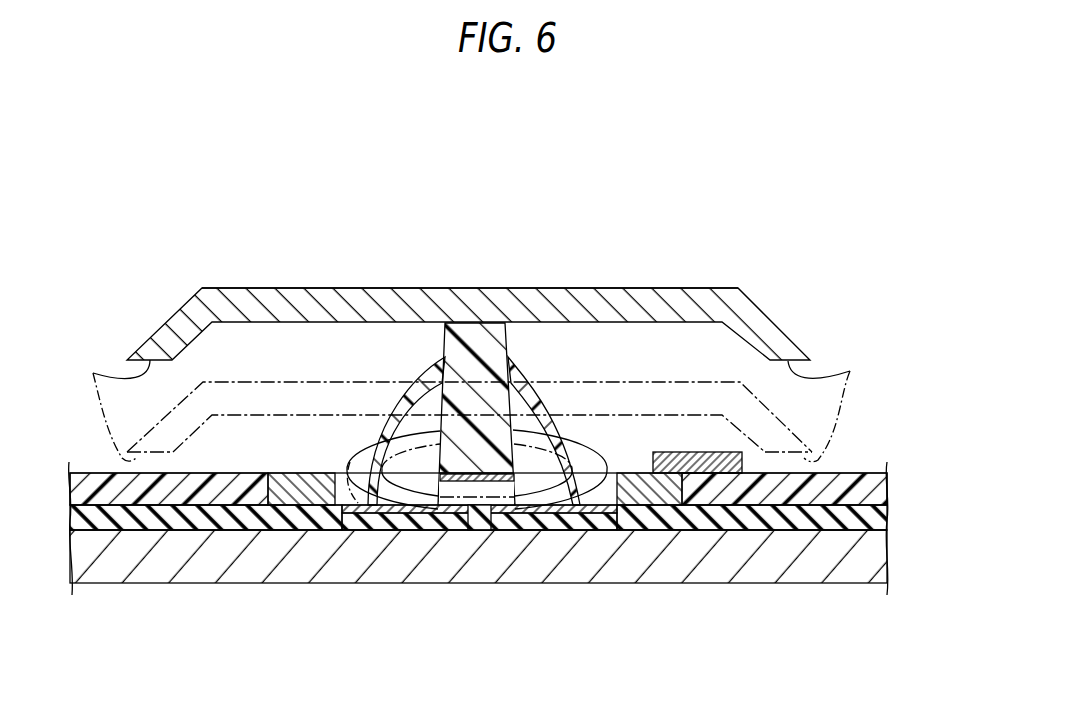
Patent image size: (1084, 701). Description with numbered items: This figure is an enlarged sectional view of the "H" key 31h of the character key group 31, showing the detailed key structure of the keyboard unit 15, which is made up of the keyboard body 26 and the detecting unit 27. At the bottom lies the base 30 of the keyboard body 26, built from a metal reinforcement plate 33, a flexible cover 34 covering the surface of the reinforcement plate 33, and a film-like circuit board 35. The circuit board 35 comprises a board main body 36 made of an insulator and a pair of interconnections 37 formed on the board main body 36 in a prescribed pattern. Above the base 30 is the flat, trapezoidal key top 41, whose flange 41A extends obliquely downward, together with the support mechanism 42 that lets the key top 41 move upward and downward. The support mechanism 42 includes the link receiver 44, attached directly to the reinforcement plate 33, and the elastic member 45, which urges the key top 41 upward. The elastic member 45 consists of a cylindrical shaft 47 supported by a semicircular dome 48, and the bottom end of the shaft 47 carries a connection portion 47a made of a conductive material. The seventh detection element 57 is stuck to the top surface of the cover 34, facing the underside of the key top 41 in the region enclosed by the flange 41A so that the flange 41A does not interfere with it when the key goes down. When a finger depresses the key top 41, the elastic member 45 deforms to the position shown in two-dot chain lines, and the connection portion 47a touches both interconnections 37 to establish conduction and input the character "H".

The keyboard unit 15 is at (466, 198).
The keyboard body 26 is at (131, 584).
The detecting unit 27 is at (722, 469).
The base 30 is at (90, 580).
The character key group 31 is at (774, 297).
The "H" key 31h is at (314, 287).
The reinforcement plate 33 is at (186, 567).
The cover 34 is at (245, 531).
The circuit board 35 is at (878, 517).
The board main body 36 is at (405, 514).
The interconnections 37 is at (490, 522).
The key top 41 is at (212, 285).
The flange 41A is at (473, 404).
The support mechanism 42 is at (542, 336).
The link receiver 44 is at (310, 497).
The elastic member 45 is at (542, 400).
The shaft 47 is at (586, 441).
The connection portion 47a is at (374, 458).
The dome 48 is at (407, 399).
The seventh detection element 57 is at (689, 468).